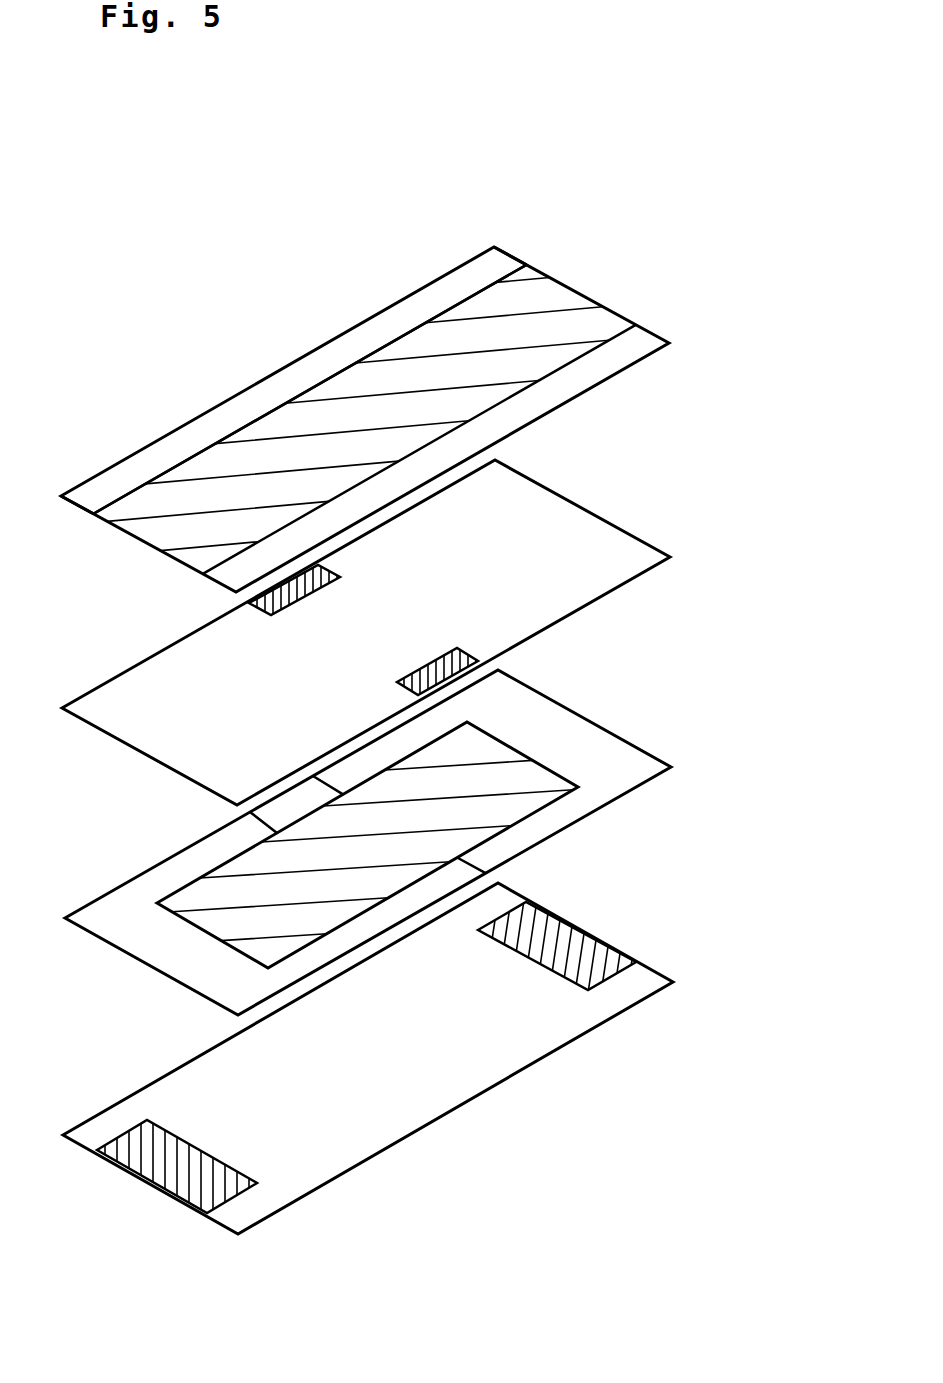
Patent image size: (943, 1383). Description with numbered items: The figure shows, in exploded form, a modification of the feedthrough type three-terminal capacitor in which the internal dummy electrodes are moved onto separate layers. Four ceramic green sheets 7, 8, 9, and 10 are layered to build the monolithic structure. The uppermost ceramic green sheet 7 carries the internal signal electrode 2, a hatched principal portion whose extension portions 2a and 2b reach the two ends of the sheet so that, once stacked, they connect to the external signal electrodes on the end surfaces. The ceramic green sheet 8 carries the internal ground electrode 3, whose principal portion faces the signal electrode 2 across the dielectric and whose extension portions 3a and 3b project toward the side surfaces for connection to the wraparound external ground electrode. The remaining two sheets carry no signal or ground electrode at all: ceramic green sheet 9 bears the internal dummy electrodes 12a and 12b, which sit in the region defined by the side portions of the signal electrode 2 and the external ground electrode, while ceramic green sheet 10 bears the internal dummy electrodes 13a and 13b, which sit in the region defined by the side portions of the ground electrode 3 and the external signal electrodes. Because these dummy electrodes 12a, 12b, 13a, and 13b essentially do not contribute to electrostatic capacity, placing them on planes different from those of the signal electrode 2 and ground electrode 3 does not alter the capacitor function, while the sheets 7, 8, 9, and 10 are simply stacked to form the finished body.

The internal signal electrode 2 is at (323, 381).
The extension portion of internal signal electrode 2a is at (127, 490).
The extension portion of internal signal electrode 2b is at (498, 277).
The ceramic green sheet 7 is at (410, 291).
The ceramic green sheet 9 is at (580, 503).
The internal dummy electrode 12a is at (262, 608).
The internal dummy electrode 12b is at (443, 649).
The ceramic green sheet 8 is at (636, 743).
The internal ground electrode 3 is at (579, 779).
The extension portion of internal ground electrode 3a is at (250, 824).
The extension portion of internal ground electrode 3b is at (475, 870).
The ceramic green sheet 10 is at (520, 1073).
The internal dummy electrode 13a is at (162, 1195).
The internal dummy electrode 13b is at (628, 948).